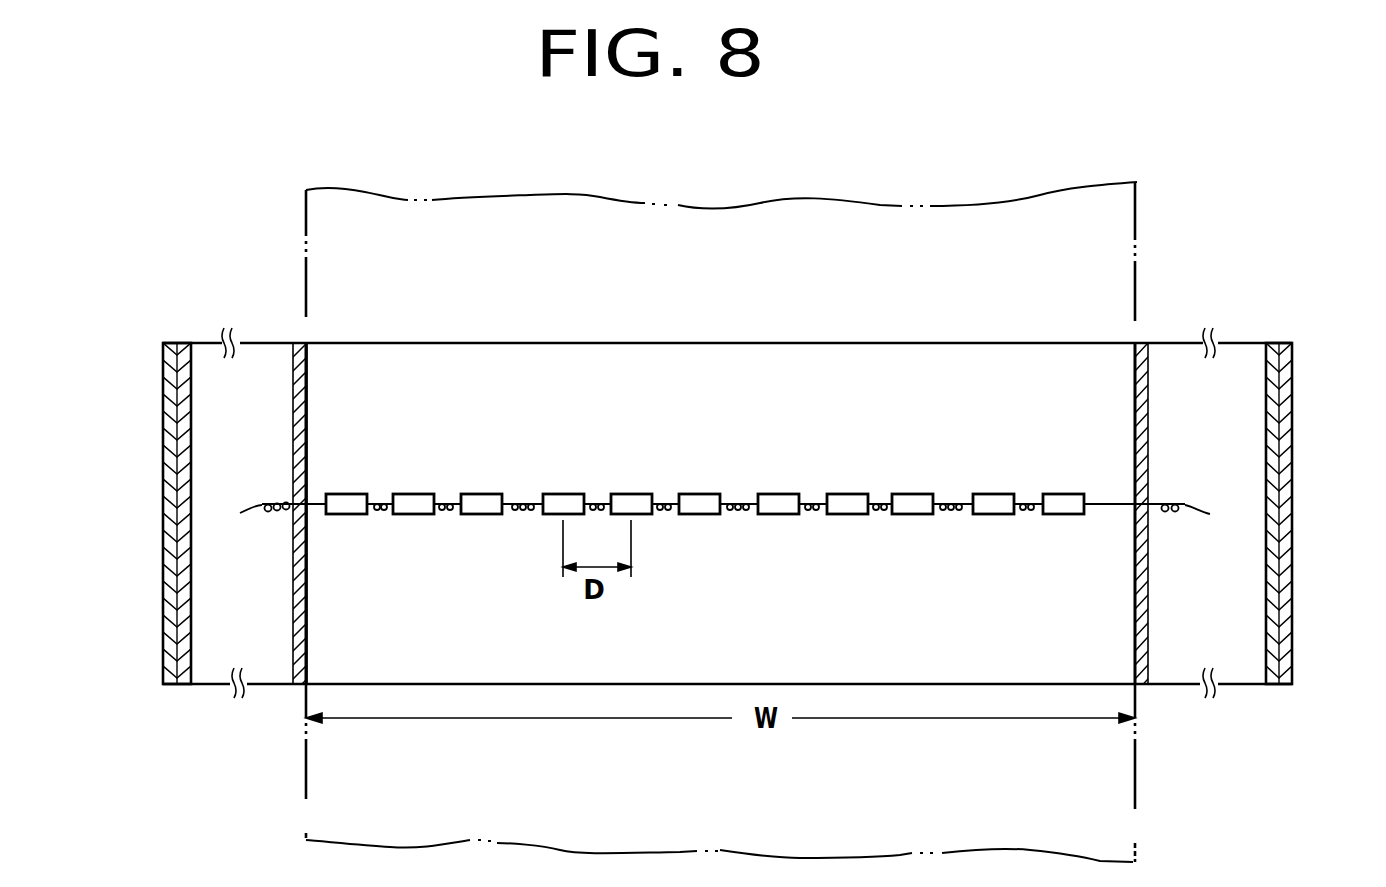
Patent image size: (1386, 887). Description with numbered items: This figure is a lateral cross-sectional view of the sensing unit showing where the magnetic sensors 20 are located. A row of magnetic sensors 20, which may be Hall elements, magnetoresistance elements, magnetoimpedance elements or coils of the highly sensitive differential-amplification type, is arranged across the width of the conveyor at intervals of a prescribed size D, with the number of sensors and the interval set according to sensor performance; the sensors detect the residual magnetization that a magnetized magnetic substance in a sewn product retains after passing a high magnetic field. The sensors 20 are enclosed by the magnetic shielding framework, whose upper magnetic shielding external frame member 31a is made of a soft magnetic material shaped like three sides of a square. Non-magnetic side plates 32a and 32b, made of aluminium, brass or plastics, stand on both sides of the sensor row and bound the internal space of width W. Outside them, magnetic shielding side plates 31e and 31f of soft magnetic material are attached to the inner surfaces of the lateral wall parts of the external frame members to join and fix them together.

The magnetic sensor 20 is at (912, 494).
The upper magnetic shielding external frame member 31a is at (176, 411).
The magnetic shielding side plate 31e is at (176, 567).
The magnetic shielding side plate 31f is at (1266, 582).
The side plate 32a is at (308, 416).
The side plate 32b is at (1150, 418).